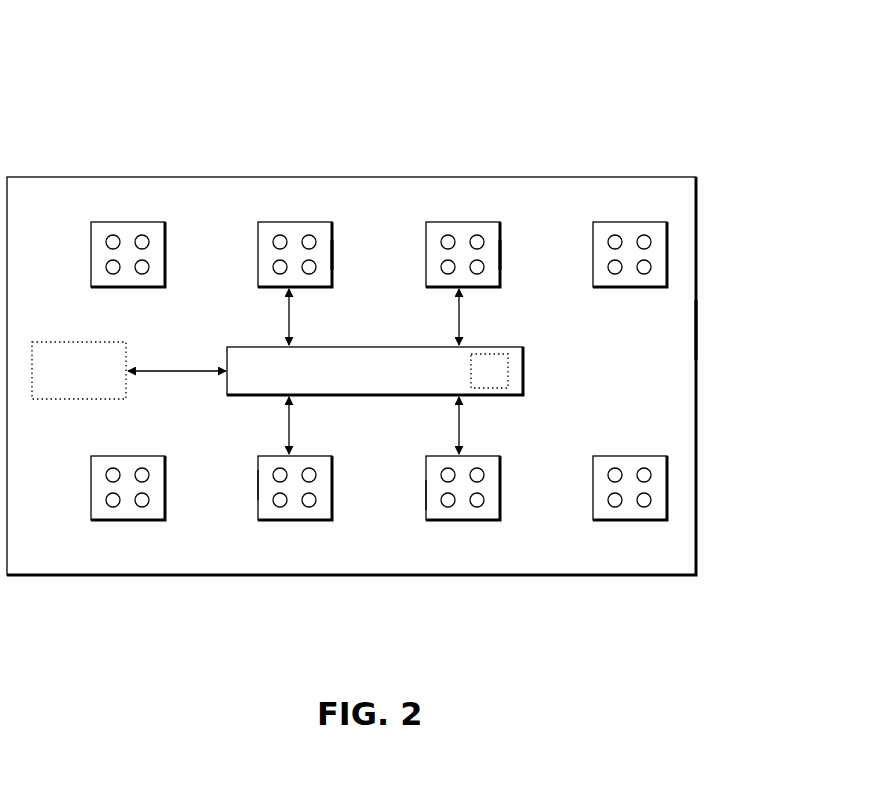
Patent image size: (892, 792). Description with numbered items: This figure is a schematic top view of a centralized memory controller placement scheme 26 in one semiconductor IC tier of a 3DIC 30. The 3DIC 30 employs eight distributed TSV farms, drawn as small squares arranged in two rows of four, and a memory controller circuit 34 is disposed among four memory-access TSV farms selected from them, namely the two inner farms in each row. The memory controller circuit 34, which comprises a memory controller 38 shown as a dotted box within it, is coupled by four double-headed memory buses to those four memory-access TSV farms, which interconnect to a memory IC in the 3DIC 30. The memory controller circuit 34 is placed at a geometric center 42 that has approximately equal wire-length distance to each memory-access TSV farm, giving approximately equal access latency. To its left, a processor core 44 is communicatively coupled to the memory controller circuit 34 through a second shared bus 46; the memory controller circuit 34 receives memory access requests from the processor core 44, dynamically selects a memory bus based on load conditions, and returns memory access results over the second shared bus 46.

The centralized memory controller placement scheme 26 is at (182, 70).
The 3DIC 30 is at (82, 177).
The memory controller circuit 34 is at (498, 346).
The memory controller 38 is at (526, 374).
The geometric center 42 is at (344, 412).
The processor core 44 is at (78, 342).
The second shared bus 46 is at (193, 370).